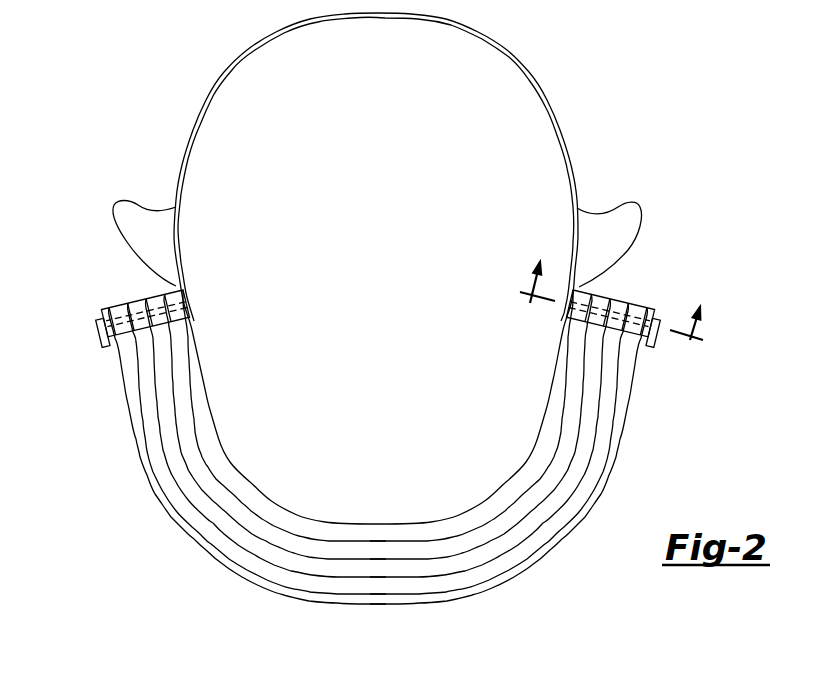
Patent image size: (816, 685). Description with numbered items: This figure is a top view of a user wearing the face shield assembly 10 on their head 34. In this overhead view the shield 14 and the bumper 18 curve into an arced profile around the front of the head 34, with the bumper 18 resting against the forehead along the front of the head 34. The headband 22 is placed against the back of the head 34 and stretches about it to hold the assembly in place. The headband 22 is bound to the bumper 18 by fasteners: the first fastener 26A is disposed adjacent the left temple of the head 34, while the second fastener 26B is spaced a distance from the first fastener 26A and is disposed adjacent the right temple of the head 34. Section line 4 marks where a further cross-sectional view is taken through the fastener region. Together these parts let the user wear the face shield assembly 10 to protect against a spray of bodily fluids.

The face shield assembly 10 is at (388, 308).
The shield 14 is at (619, 450).
The bumper 18 is at (605, 300).
The headband 22 is at (515, 55).
The first fastener 26A is at (665, 322).
The second fastener 26B is at (92, 328).
The head 34 is at (390, 280).
The section line 4- 4 is at (609, 320).